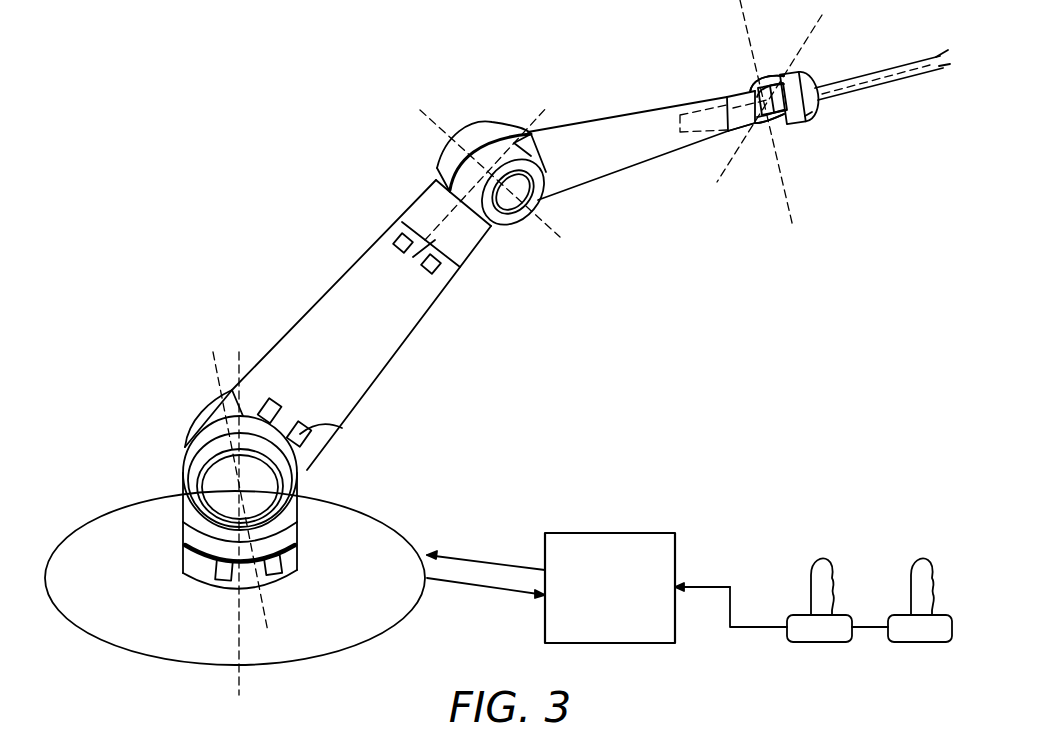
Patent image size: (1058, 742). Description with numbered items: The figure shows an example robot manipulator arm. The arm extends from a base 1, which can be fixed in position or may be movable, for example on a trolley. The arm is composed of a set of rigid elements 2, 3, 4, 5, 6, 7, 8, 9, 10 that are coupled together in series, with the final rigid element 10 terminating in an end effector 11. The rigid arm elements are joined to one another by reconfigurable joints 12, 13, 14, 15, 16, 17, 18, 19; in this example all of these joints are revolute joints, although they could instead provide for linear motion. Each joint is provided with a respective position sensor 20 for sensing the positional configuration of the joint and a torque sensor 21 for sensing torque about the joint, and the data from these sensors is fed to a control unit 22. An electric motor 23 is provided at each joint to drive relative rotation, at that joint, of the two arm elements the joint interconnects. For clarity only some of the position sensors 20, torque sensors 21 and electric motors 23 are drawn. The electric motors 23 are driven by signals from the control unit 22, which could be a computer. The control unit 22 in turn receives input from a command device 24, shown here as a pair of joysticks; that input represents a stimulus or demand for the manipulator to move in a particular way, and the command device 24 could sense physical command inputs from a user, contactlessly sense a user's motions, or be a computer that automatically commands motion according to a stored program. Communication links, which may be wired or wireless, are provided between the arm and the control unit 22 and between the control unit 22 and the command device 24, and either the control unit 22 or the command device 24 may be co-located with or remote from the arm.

The base 1 is at (393, 535).
The rigid element 2 is at (190, 560).
The rigid element 3 is at (190, 473).
The rigid element 4 is at (283, 343).
The rigid element 5 is at (423, 202).
The rigid element 6 is at (598, 118).
The rigid element 7 is at (733, 97).
The rigid element 8 is at (772, 87).
The rigid element 9 is at (783, 123).
The rigid element 10 is at (810, 107).
The end effector 11 is at (940, 72).
The reconfigurable joint 12 is at (293, 541).
The reconfigurable joint 13 is at (203, 432).
The reconfigurable joint 14 is at (465, 250).
The reconfigurable joint 15 is at (487, 118).
The reconfigurable joint 16 is at (733, 133).
The reconfigurable joint 17 is at (760, 88).
The reconfigurable joint 18 is at (768, 128).
The reconfigurable joint 19 is at (807, 112).
The position sensor 20 is at (277, 397).
The torque sensor 21 is at (310, 420).
The control unit 22 is at (648, 533).
The electric motor 23 is at (677, 130).
The command device 24 is at (883, 539).